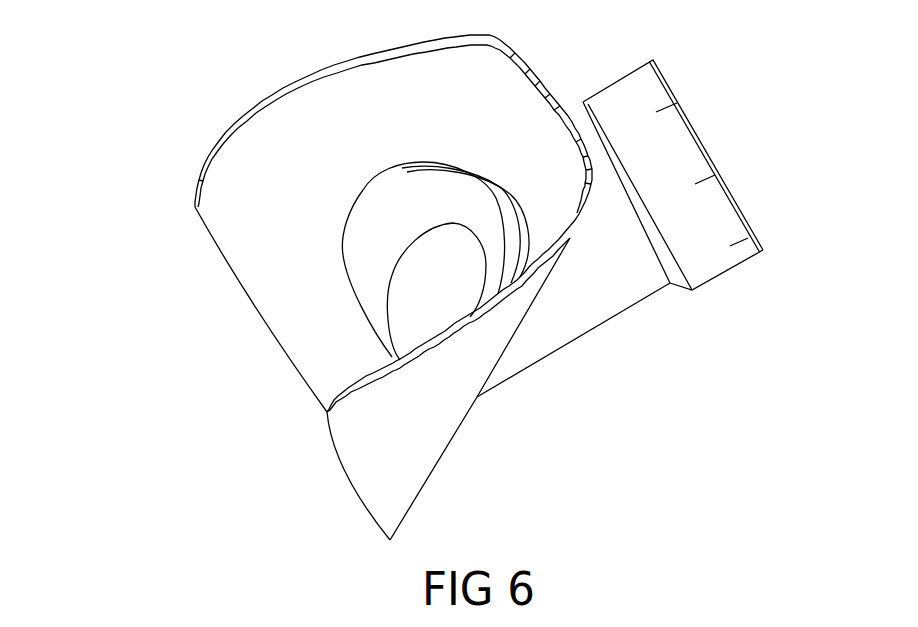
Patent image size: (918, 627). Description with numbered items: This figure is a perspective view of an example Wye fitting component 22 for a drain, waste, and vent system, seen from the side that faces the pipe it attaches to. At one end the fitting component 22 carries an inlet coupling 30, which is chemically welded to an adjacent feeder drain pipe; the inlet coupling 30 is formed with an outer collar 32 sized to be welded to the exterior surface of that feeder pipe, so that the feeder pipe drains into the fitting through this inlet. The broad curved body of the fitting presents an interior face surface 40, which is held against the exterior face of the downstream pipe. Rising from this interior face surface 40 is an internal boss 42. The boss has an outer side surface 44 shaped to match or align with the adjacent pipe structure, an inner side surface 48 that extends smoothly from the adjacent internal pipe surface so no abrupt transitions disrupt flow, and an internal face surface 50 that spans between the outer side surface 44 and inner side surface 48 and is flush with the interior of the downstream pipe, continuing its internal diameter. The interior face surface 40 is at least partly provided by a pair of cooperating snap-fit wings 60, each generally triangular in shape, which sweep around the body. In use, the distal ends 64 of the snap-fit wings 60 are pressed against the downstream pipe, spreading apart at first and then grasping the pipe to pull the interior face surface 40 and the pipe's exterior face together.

The Wye fitting component 22 is at (625, 382).
The inlet coupling 30 is at (714, 92).
The outer collar 32 is at (714, 254).
The interior face surface 40 is at (302, 181).
The internal boss 42 is at (359, 176).
The outer side surface 44 is at (495, 192).
The inner side surface 48 is at (392, 278).
The internal face surface 50 is at (372, 228).
The snap-fit wings 60 is at (328, 97).
The distal ends 64 is at (195, 207).